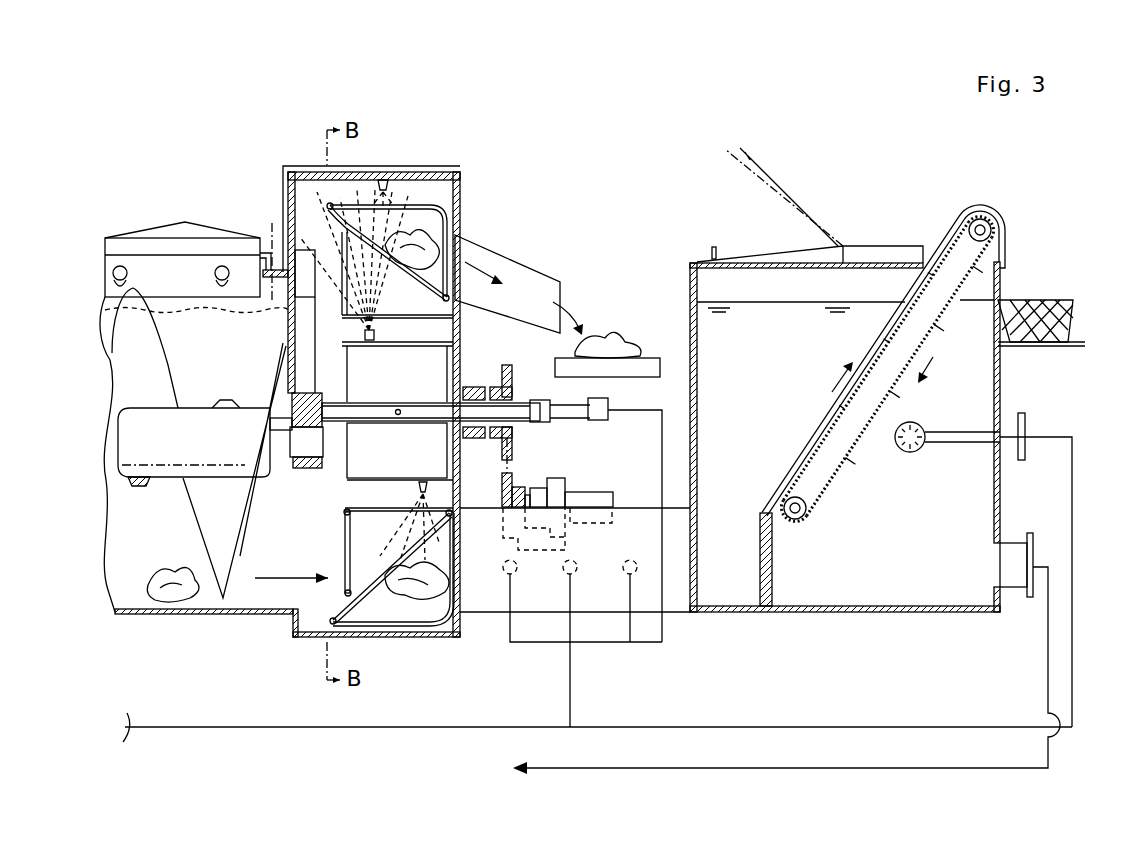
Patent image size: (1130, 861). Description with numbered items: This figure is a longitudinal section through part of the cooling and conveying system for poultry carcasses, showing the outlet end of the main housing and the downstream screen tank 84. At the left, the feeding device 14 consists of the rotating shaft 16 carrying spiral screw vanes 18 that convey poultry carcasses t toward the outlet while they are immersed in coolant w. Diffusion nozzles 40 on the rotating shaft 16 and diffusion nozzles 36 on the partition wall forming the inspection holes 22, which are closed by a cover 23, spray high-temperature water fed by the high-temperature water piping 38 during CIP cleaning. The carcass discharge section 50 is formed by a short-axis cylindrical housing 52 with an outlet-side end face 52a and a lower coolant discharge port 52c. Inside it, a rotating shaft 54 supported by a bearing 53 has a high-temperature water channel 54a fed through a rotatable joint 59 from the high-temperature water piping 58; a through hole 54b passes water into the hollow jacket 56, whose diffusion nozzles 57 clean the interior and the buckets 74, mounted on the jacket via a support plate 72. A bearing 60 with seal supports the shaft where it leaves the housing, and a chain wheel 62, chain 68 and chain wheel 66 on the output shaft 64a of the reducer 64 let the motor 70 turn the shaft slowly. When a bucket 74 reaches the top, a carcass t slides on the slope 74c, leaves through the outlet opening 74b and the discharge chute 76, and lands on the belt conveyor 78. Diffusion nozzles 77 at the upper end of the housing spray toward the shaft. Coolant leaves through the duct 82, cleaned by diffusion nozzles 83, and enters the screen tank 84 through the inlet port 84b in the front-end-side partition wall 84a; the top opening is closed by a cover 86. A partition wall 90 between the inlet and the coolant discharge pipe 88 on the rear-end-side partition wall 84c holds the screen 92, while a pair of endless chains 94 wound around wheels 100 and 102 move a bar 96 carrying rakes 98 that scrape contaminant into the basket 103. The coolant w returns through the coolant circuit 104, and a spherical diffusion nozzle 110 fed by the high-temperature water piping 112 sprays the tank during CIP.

The feeding device 14 is at (208, 330).
The rotating shaft 16 is at (197, 407).
The spiral screw vanes 18 is at (147, 338).
The inspection holes 22 is at (262, 256).
The cover 23 is at (170, 226).
The diffusion nozzles 36 is at (222, 266).
The high-temperature water piping 38 is at (285, 190).
The diffusion nozzles 40 is at (233, 402).
The carcass discharge section 50 is at (303, 160).
The short-axis cylindrical housing 52 is at (432, 168).
The outlet-side end face 52a is at (461, 186).
The coolant discharge port 52c is at (458, 640).
The bearing 53 is at (298, 468).
The rotating shaft 54 is at (420, 395).
The high-temperature water channel 54a is at (363, 414).
The through hole 54b is at (387, 392).
The hollow jacket 56 is at (363, 483).
The diffusion nozzles 57 is at (376, 334).
The high-temperature water piping 58 is at (575, 683).
The rotatable joint 59 is at (611, 404).
The bearing 60 is at (486, 390).
The chain wheel 62 is at (514, 395).
The reducer 64 is at (560, 478).
The output shaft 64a is at (503, 512).
The chain wheel 66 is at (514, 487).
The chain 68 is at (508, 462).
The motor 70 is at (606, 492).
The support plate 72 is at (347, 514).
The buckets 74 is at (458, 198).
The outlet opening 74b is at (457, 260).
The slope 74c is at (430, 275).
The discharge chute 76 is at (537, 262).
The diffusion nozzles 77 is at (386, 170).
The belt conveyor 78 is at (658, 358).
The duct 82 is at (673, 614).
The diffusion nozzles 83 is at (631, 561).
The screen tank 84 is at (898, 230).
The front-end-side partition wall 84a is at (692, 318).
The inlet port 84b is at (697, 557).
The rear-end-side partition wall 84c is at (999, 492).
The cover 86 is at (740, 258).
The coolant discharge pipe 88 is at (1028, 532).
The partition wall 90 is at (760, 533).
The screen 92 is at (946, 252).
The endless chains 94 is at (838, 466).
The bar 96 is at (925, 297).
The rakes 98 is at (880, 350).
The wheel 100 is at (978, 217).
The wheel 102 is at (789, 497).
The basket 103 is at (1040, 297).
The coolant circuit 104 is at (763, 770).
The spherical diffusion nozzle 110 is at (925, 428).
The high-temperature water piping 112 is at (802, 724).
The poultry carcass t is at (172, 600).
The coolant w is at (272, 230).